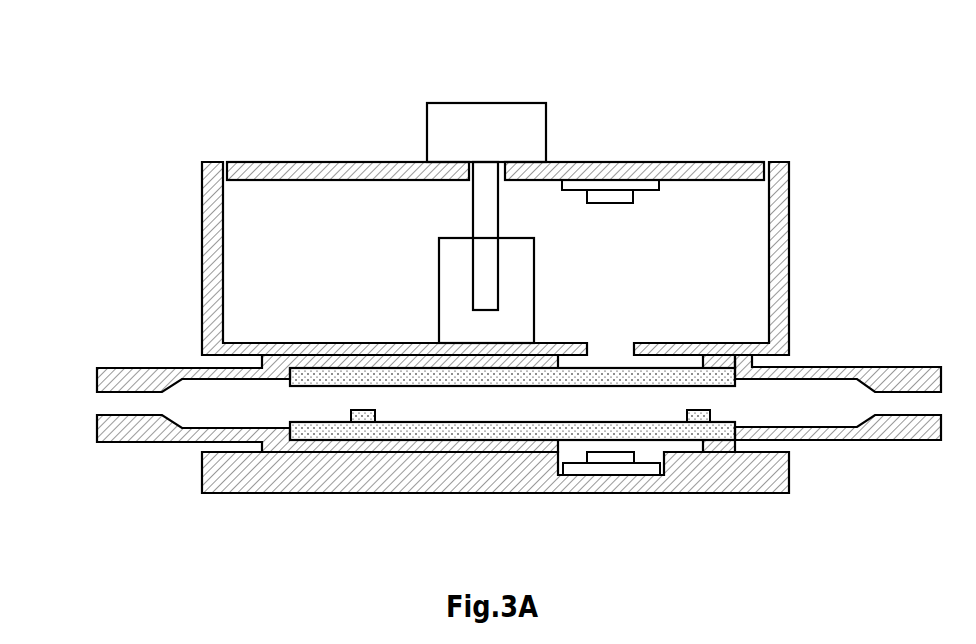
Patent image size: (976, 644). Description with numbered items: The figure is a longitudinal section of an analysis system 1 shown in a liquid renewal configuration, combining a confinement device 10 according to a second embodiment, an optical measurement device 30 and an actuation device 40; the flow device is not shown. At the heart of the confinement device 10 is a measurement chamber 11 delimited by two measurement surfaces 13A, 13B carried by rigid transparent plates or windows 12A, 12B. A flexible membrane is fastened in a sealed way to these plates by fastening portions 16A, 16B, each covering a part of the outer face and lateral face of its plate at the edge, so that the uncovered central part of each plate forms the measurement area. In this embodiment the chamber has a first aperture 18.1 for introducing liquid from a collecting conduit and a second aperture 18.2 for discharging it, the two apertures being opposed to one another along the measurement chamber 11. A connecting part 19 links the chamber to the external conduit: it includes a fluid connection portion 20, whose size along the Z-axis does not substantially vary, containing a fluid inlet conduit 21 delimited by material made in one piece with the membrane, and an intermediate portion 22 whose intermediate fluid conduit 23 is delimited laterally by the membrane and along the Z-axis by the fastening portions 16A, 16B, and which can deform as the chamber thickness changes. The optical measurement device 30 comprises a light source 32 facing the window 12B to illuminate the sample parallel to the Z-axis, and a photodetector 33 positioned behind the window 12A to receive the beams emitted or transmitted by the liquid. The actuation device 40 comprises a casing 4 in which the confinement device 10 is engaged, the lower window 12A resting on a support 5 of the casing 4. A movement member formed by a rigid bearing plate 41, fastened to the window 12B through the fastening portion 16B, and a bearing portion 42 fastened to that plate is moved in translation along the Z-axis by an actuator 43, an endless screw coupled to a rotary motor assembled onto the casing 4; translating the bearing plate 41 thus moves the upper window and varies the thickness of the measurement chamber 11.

The analysis system 1 is at (102, 150).
The casing 4 is at (278, 162).
The support 5 is at (367, 477).
The confinement device 10 is at (125, 340).
The measurement chamber 11 is at (542, 416).
The rigid plate (transparent window) 12A is at (604, 430).
The rigid plate (transparent window) 12B is at (615, 368).
The measurement surface 13A is at (447, 422).
The measurement surface 13B is at (490, 387).
The fastening portion 16A is at (308, 445).
The fastening portion 16B is at (293, 362).
The first aperture 18.1 is at (725, 416).
The second aperture 18.2 is at (268, 416).
The connecting part 19 is at (862, 322).
The fluid connection portion 20 is at (895, 367).
The fluid inlet conduit 21 is at (893, 405).
The intermediate portion 22 is at (822, 367).
The intermediate fluid conduit 23 is at (818, 410).
The optical measurement device 30 is at (643, 150).
The light source 32 is at (634, 197).
The photodetector 33 is at (640, 455).
The actuation device 40 is at (538, 88).
The bearing plate 41 is at (352, 348).
The bearing portion 42 is at (439, 290).
The actuator 43 is at (427, 133).